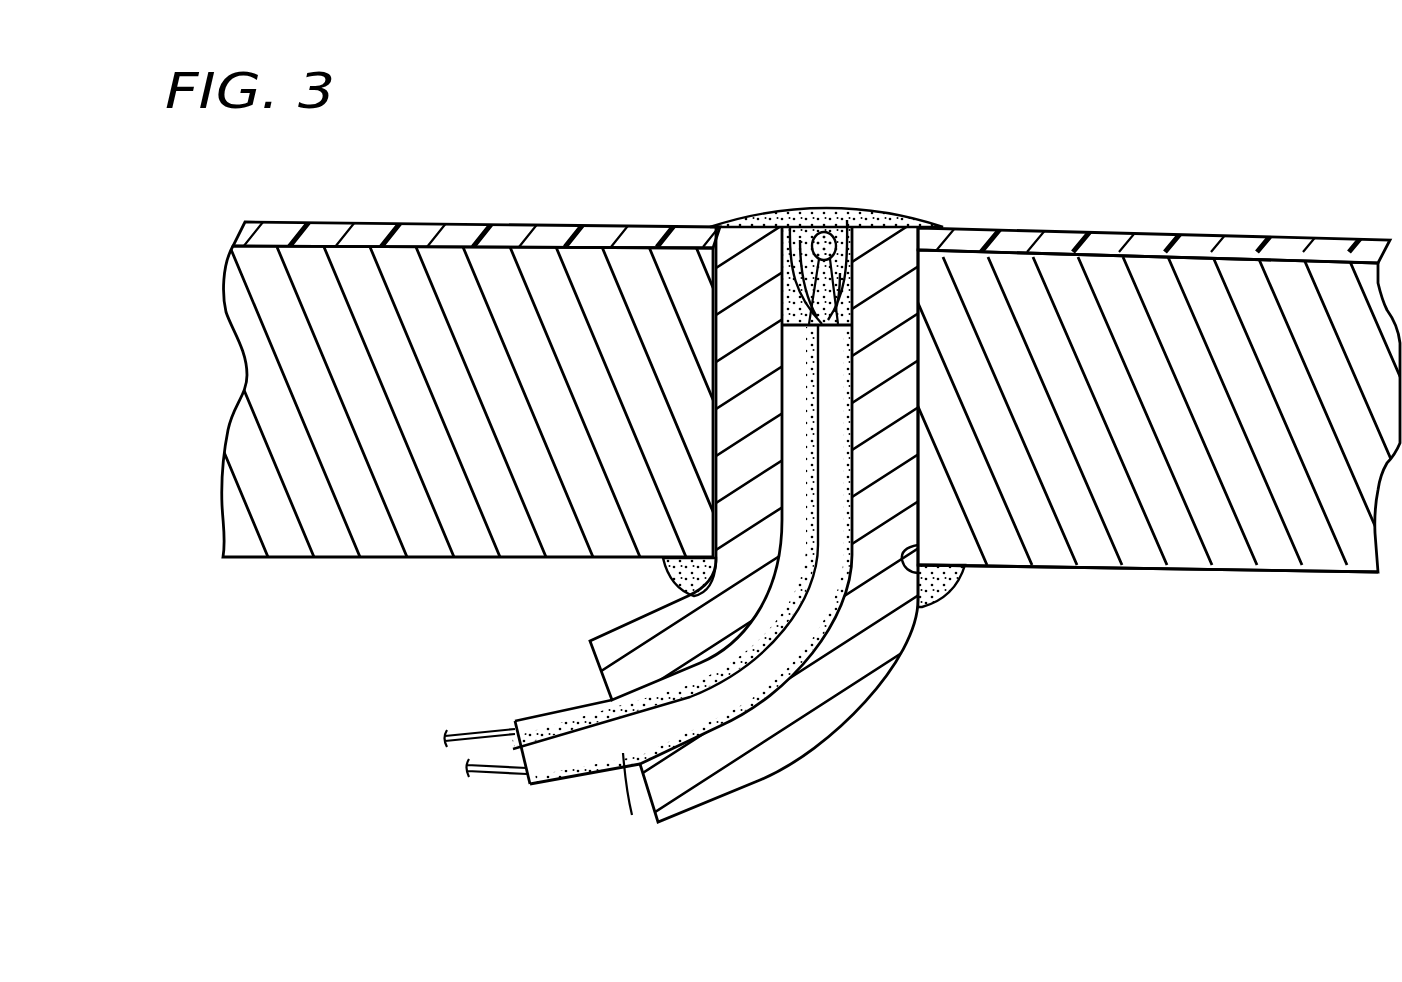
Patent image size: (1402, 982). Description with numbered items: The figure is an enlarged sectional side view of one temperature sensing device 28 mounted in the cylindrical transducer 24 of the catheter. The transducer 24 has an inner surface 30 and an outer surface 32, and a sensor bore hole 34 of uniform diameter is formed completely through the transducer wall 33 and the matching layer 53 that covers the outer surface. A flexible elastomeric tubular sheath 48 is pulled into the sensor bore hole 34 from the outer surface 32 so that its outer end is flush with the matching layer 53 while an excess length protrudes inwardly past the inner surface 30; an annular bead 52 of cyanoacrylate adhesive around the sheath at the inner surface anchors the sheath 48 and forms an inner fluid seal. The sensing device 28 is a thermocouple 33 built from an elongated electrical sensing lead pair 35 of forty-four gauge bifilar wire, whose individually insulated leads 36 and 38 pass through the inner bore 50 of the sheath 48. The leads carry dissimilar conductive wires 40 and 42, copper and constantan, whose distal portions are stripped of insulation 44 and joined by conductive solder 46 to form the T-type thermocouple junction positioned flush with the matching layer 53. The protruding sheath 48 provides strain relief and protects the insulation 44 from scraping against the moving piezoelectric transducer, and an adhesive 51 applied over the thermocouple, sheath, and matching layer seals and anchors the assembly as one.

The cylindrical transducer 24 is at (372, 566).
The matching layer 53 is at (500, 222).
The temperature sensing device 28 is at (749, 491).
The inner surface 30 is at (1191, 567).
The outer surface 32 is at (1183, 250).
The thermocouple 33 is at (1308, 542).
The sensor bore hole 34 is at (950, 584).
The electrical sensing lead pair 35 is at (726, 618).
The electrical temperature sensing lead 36 is at (560, 707).
The electrical temperature sensing lead 38 is at (565, 787).
The electrically conductive wire 40 is at (790, 227).
The electrically conductive wire 42 is at (847, 222).
The insulation 44 is at (598, 720).
The conductive solder 46 is at (817, 232).
The tubular sheath 48 is at (823, 740).
The inner bore 50 is at (815, 657).
The adhesive 51 is at (893, 214).
The annular bead 52 is at (661, 573).